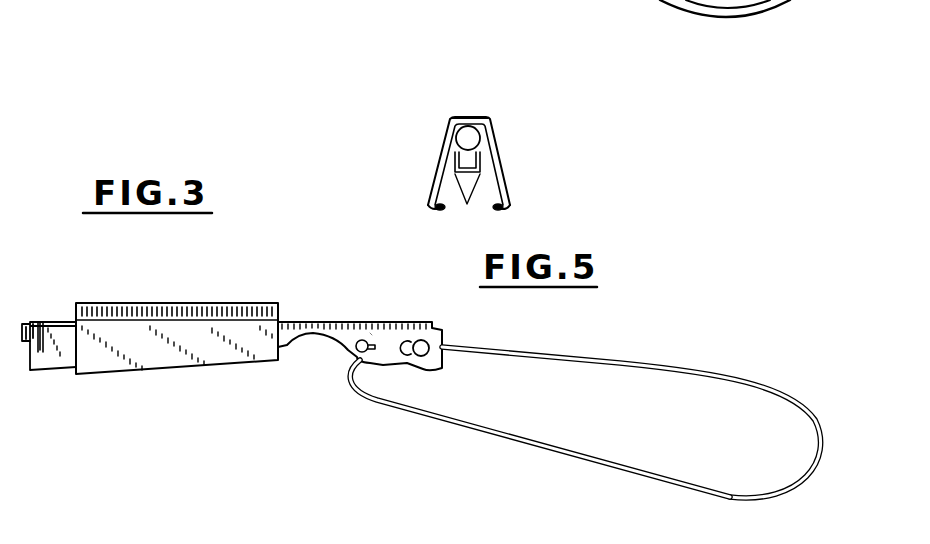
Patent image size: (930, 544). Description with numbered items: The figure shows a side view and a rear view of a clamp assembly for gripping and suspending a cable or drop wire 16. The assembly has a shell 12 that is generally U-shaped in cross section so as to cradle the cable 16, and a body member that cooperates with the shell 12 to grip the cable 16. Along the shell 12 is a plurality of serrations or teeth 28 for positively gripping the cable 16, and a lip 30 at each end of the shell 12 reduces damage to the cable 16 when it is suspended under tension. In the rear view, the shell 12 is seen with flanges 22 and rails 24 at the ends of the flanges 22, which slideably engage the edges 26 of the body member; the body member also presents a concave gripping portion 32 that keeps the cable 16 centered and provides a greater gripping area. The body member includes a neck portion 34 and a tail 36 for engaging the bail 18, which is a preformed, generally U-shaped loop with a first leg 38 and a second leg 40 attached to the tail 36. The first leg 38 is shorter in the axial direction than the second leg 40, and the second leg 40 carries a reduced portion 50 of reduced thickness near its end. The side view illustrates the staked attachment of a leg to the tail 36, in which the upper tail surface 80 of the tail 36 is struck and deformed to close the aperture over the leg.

In FIG. 5, the shell 12 is at (433, 80).
In FIG. 5, the cable or drop wire 16 is at (468, 138).
In FIG. 3, the bail 18 is at (585, 416).
In FIG. 5, the flanges 22 is at (437, 170).
In FIG. 5, the rails 24 is at (432, 208).
In FIG. 5, the edges 26 is at (468, 206).
In FIG. 3, the serrations or teeth 28 is at (176, 311).
In FIG. 3, the lip 30 is at (78, 303).
In FIG. 5, the lip 30 is at (468, 117).
In FIG. 5, the concave gripping portion 32 is at (472, 148).
In FIG. 3, the neck portion 34 is at (313, 333).
In FIG. 3, the tail 36 is at (370, 333).
In FIG. 3, the first leg 38 is at (635, 362).
In FIG. 3, the second leg 40 is at (578, 462).
In FIG. 3, the reduced portion 50 is at (364, 352).
In FIG. 3, the upper tail surface 80 is at (420, 357).